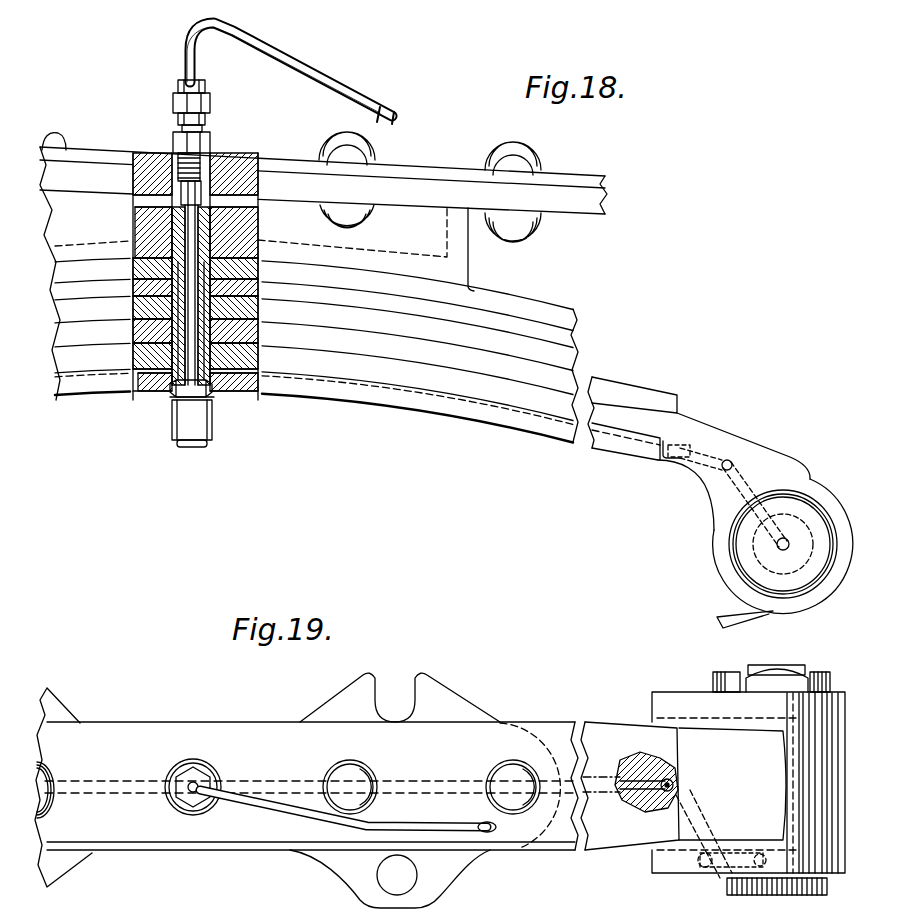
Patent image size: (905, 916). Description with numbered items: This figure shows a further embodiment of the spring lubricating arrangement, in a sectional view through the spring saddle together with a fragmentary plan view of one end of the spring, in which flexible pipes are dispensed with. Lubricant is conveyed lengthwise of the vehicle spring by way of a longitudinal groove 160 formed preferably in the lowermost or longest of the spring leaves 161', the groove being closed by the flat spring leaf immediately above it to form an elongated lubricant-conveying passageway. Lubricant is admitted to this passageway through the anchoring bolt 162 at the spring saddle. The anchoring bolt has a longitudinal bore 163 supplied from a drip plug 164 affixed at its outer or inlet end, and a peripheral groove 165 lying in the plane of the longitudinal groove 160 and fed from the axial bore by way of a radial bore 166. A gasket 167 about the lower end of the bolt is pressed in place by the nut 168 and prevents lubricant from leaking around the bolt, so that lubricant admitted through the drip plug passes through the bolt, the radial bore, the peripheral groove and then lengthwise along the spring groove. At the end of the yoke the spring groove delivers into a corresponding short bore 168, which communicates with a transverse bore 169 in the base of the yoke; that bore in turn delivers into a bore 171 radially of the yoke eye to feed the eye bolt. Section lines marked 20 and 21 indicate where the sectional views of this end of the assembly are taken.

In FIG. 18, the longitudinal groove 160 is at (396, 384).
In FIG. 19, the longitudinal groove 160 is at (662, 748).
In FIG. 18, the lowermost spring leaf 161' is at (314, 431).
In FIG. 18, the anchoring bolt 162 is at (235, 233).
In FIG. 18, the longitudinal bore 163 is at (193, 333).
In FIG. 18, the drip plug 164 is at (207, 152).
In FIG. 18, the peripheral groove 165 is at (148, 366).
In FIG. 18, the radial bore 166 is at (207, 366).
In FIG. 18, the gasket 167 is at (212, 398).
In FIG. 18, the nut 168 is at (176, 427).
In FIG. 19, the nut 168 is at (678, 784).
In FIG. 18, the transverse bore 169 is at (702, 466).
In FIG. 19, the transverse bore 169 is at (701, 826).
In FIG. 18, the bore radially of the yoke eye 171 is at (737, 498).
In FIG. 19, the bore radially of the yoke eye 171 is at (743, 868).
In FIG. 18, the section line 20- 20 is at (606, 356).
In FIG. 18, the section line 21- 21 is at (672, 450).